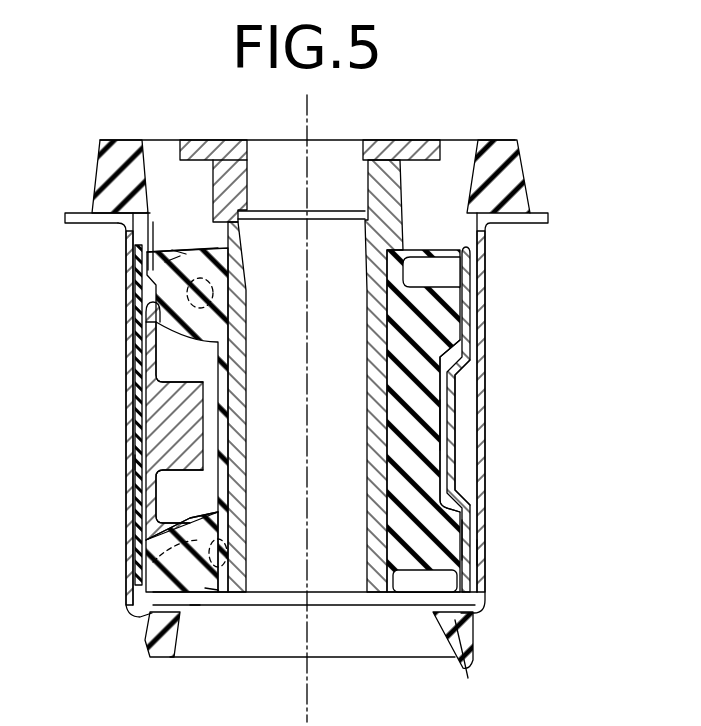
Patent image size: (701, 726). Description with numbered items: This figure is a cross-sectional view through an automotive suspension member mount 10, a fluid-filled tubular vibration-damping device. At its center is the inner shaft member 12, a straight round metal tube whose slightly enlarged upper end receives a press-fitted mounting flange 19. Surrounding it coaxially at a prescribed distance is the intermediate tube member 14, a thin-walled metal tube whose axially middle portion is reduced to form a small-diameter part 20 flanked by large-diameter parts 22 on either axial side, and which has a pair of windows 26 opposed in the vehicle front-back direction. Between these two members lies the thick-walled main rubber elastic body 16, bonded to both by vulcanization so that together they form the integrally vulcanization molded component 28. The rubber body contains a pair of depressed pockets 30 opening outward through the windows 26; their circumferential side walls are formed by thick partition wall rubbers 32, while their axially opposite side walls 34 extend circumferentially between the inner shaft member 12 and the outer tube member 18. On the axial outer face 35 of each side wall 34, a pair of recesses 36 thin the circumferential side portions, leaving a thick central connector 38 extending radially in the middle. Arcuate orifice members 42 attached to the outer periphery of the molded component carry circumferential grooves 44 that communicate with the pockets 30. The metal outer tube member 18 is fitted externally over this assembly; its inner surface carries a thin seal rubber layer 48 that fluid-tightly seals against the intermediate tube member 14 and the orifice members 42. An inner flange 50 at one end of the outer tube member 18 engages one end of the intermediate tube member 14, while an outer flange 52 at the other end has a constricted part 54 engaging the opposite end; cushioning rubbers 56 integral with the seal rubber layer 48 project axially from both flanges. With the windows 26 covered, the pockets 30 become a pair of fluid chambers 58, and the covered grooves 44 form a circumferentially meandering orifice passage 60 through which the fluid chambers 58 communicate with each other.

The suspension member mount 10 is at (560, 119).
The inner shaft member 12 is at (372, 380).
The intermediate tube member 14 is at (484, 301).
The main rubber elastic body 16 is at (477, 551).
The outer tube member 18 is at (124, 393).
The mounting flange 19 is at (402, 158).
The small-diameter part 20 is at (443, 416).
The large-diameter part 22 is at (473, 266).
The window 26 is at (152, 312).
The integrally vulcanization molded component 28 is at (419, 222).
The pocket 30 is at (163, 538).
The partition wall rubber 32 is at (425, 425).
The side wall 34 is at (170, 261).
The axial outer face 35 is at (180, 253).
The recess 36 is at (220, 292).
The central connector 38 is at (165, 290).
The orifice member 42 is at (136, 462).
The groove 44 is at (147, 440).
The seal rubber layer 48 is at (476, 533).
The inner flange 50 is at (460, 636).
The outer flange 52 is at (76, 214).
The constricted part 54 is at (148, 222).
The cushioning rubber 56 is at (105, 166).
The fluid chamber 58 is at (154, 497).
The orifice passage 60 is at (473, 430).